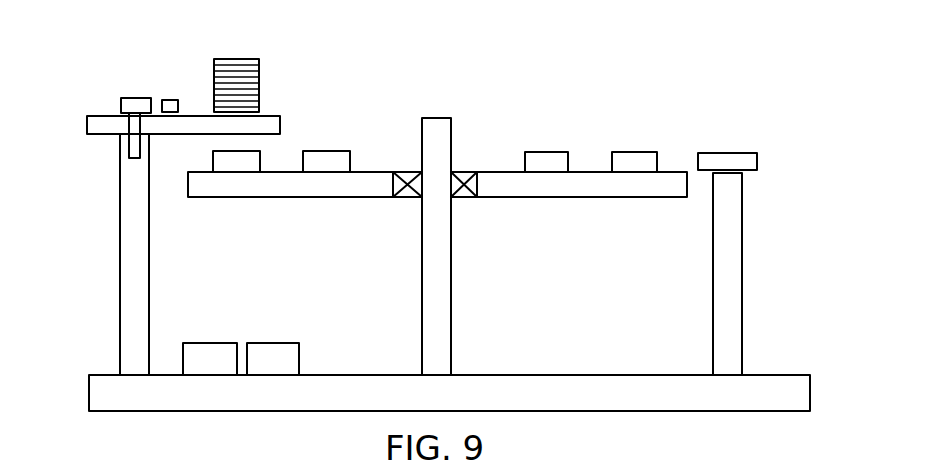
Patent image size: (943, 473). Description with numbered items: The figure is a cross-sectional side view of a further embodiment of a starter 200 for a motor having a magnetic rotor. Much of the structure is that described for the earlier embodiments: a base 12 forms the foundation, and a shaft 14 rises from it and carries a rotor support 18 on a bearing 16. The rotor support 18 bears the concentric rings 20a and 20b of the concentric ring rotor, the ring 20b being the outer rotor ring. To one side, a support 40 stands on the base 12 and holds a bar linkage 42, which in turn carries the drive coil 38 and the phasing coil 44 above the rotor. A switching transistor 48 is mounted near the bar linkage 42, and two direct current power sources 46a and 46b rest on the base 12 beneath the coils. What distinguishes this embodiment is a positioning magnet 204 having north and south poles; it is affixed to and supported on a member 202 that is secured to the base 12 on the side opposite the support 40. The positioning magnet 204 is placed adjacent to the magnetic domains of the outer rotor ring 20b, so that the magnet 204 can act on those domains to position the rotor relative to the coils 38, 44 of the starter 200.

The base 12 is at (812, 393).
The shaft 14 is at (452, 142).
The bearing 16 is at (462, 198).
The rotor support 18 is at (690, 186).
The concentric ring 20a is at (582, 157).
The concentric ring 20b is at (672, 157).
The drive coil 38 is at (259, 102).
The support 40 is at (119, 224).
The bar linkage 42 is at (179, 127).
The phasing coil 44 is at (259, 72).
The direct current power source 46a is at (205, 343).
The direct current power source 46b is at (281, 343).
The switching transistor 48 is at (171, 100).
The starter 200 is at (655, 78).
The member 202 is at (742, 280).
The positioning magnet 204 is at (757, 163).